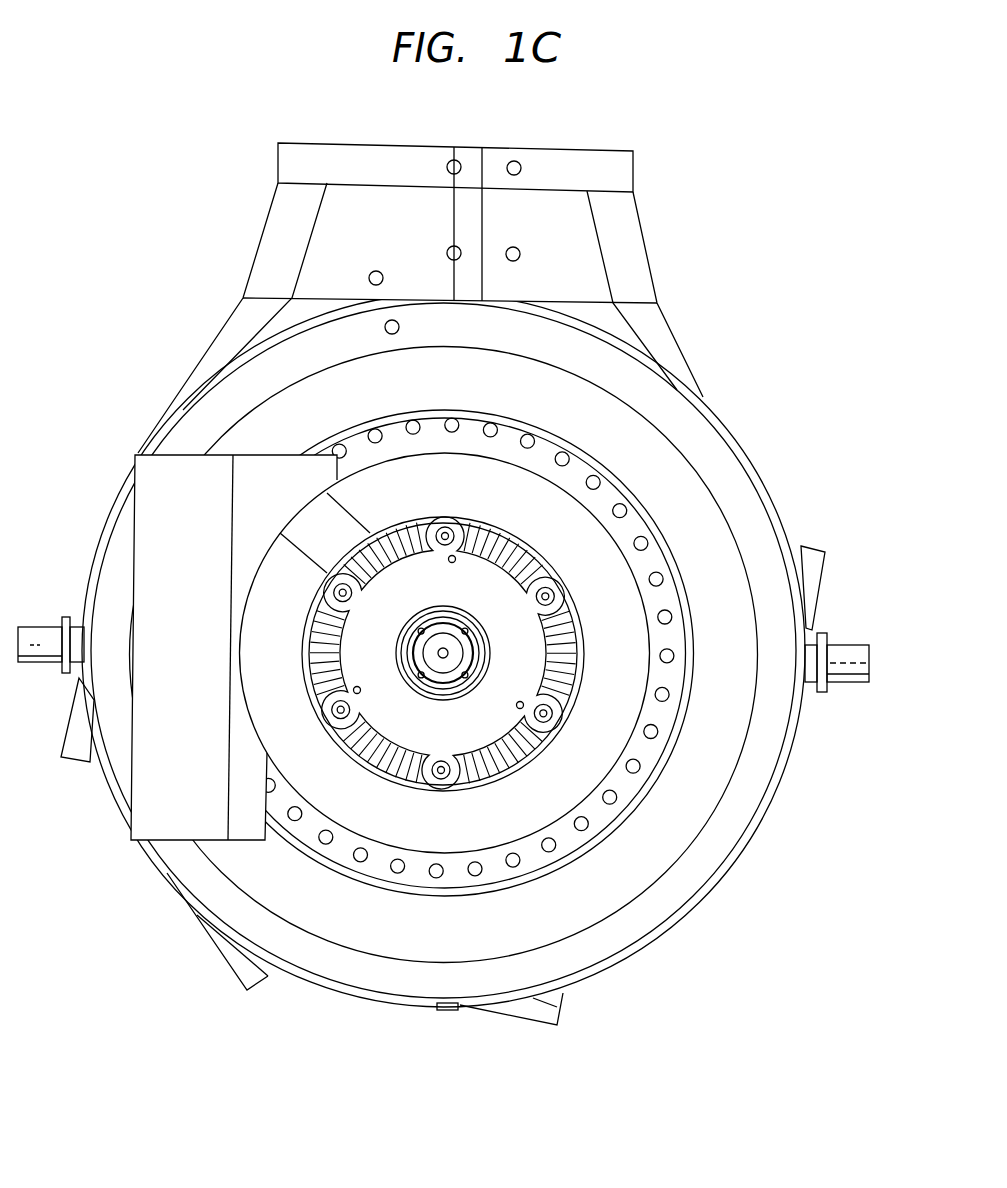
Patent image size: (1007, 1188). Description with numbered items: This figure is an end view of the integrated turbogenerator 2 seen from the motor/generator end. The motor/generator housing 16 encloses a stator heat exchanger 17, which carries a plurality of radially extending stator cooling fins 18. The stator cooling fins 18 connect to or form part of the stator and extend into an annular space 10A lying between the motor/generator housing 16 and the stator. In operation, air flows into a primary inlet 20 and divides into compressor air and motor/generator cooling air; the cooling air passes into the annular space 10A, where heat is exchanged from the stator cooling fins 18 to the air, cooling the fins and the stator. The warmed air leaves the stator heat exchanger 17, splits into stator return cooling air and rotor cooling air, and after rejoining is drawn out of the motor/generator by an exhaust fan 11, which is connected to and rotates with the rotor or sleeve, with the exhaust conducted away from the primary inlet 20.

The motor housing 2 is at (604, 140).
The annular space 10A is at (573, 660).
The exhaust fan 11 is at (417, 685).
The motor/generator housing 16 is at (520, 758).
The stator heat exchanger 17 is at (582, 618).
The stator cooling fins 18 is at (533, 550).
The primary inlet 20 is at (447, 496).